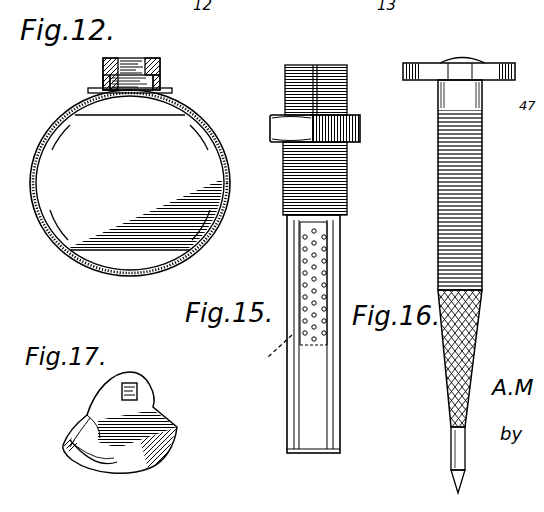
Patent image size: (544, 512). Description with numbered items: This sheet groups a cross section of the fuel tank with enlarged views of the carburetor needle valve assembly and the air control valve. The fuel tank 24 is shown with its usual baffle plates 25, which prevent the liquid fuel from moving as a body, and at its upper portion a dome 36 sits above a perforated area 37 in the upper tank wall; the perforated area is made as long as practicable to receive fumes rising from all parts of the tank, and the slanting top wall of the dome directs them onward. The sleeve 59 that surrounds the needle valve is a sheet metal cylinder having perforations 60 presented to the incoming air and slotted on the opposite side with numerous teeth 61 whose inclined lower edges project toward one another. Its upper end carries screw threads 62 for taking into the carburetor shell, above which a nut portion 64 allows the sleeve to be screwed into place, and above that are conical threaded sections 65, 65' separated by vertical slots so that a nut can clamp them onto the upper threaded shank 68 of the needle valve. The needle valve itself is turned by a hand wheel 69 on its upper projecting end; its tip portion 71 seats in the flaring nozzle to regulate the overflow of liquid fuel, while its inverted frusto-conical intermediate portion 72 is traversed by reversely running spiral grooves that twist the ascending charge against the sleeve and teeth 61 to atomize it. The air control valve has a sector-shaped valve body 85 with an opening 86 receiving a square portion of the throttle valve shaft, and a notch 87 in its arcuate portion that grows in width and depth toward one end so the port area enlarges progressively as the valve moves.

In FIG. 12, the fuel tank 24 is at (62, 255).
In FIG. 12, the baffle plates 25 is at (92, 238).
In FIG. 12, the dome 36 is at (160, 78).
In FIG. 12, the perforated area 37 is at (128, 94).
In FIG. 15, the sleeve 59 is at (298, 392).
In FIG. 15, the perforations 60 is at (328, 237).
In FIG. 15, the teeth 61 is at (271, 351).
In FIG. 15, the screw threads 62 is at (350, 172).
In FIG. 15, the nut portion 64 is at (360, 128).
In FIG. 15, the conical threaded sections 65 is at (316, 75).
In FIG. 15, the slit 65' is at (329, 75).
In FIG. 16, the upper threaded shank 68 is at (483, 250).
In FIG. 16, the hand wheel 69 is at (505, 67).
In FIG. 16, the tip portion 71 is at (452, 460).
In FIG. 16, the intermediate portion 72 is at (470, 352).
In FIG. 17, the valve body 85 is at (85, 420).
In FIG. 17, the opening 86 is at (120, 392).
In FIG. 17, the notch 87 is at (55, 447).